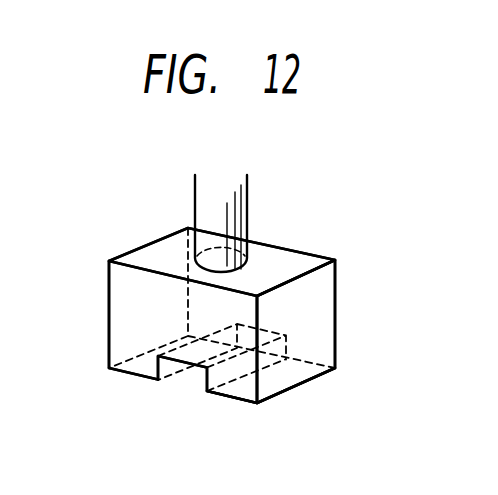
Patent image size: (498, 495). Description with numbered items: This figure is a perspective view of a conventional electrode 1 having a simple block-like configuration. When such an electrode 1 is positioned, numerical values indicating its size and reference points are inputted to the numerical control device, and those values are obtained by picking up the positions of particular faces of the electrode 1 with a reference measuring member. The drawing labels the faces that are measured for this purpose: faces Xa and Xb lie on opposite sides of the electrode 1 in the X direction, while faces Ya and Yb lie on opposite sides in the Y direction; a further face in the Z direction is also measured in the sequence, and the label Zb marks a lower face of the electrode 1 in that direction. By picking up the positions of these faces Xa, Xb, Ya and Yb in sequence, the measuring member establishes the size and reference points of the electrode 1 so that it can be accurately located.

The electrode 1 is at (272, 256).
The face Xa is at (312, 332).
The face Xb is at (141, 296).
The face Ya is at (310, 297).
The face Yb is at (145, 371).
The Z-direction surface b Zb is at (278, 371).